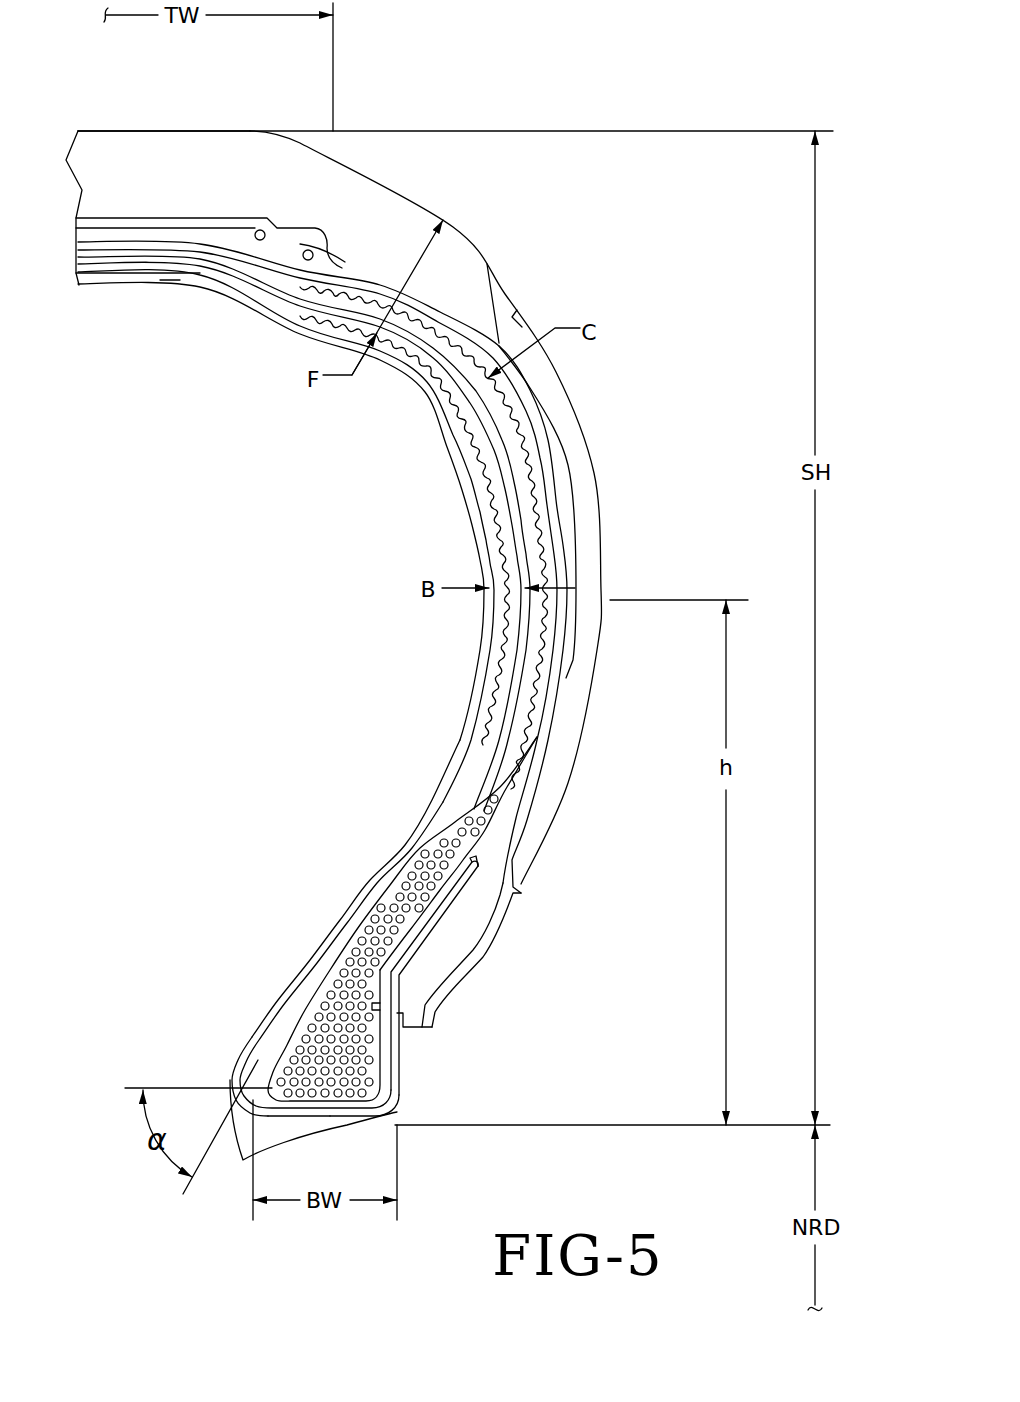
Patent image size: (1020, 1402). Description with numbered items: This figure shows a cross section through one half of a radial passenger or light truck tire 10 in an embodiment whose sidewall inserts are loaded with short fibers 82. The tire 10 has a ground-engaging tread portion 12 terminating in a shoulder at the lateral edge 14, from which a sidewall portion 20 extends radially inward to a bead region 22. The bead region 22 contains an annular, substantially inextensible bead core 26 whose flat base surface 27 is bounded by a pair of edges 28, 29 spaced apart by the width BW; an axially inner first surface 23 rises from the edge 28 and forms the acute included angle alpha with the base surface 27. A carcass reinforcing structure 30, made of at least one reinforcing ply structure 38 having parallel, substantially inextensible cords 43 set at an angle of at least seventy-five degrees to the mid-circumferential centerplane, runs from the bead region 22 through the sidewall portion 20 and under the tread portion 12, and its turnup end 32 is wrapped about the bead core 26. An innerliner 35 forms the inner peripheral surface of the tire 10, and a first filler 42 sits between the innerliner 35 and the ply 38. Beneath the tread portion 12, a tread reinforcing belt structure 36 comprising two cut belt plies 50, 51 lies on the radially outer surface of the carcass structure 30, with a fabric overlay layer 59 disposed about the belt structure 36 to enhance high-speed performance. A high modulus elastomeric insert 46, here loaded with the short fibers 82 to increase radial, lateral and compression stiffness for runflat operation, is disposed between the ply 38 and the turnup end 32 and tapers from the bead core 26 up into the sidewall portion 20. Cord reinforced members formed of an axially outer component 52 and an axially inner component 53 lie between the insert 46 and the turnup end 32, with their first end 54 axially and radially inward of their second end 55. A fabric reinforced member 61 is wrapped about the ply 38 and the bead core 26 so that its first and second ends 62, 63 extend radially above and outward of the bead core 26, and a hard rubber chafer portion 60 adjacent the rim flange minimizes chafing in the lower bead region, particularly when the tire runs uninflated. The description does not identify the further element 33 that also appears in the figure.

The tire 10 is at (375, 100).
The tread portion 12 is at (88, 218).
The lateral edge 14 is at (338, 148).
The sidewall portion 20 is at (600, 543).
The bead region 22 is at (333, 987).
The axially inner first surface 23 is at (255, 1054).
The bead core 26 is at (310, 1053).
The flat base surface 27 is at (355, 1100).
The edge 28 is at (278, 1100).
The edge 29 is at (387, 1087).
The carcass reinforcing structure 30 is at (171, 274).
The turnup end 32 is at (533, 447).
The innerliner 33 is at (116, 266).
The innerliner 35 is at (358, 895).
The tread reinforcing belt structure 36 is at (160, 228).
The reinforcing ply structure 38 is at (495, 455).
The first filler 42 is at (505, 560).
The cords 43 is at (548, 483).
The elastomeric insert 46 is at (545, 503).
The belt ply 50 is at (240, 236).
The belt ply 51 is at (238, 250).
The axially outer component 52 is at (433, 923).
The axially inner component 53 is at (450, 897).
The first end 54 is at (382, 1050).
The second end 55 is at (467, 873).
The fabric overlay layer 59 is at (215, 243).
The hard rubber chafer portion 60 is at (440, 985).
The fabric reinforced member 61 is at (280, 998).
The first end 62 is at (330, 937).
The second end 63 is at (404, 1019).
The short fibers 82 is at (460, 392).